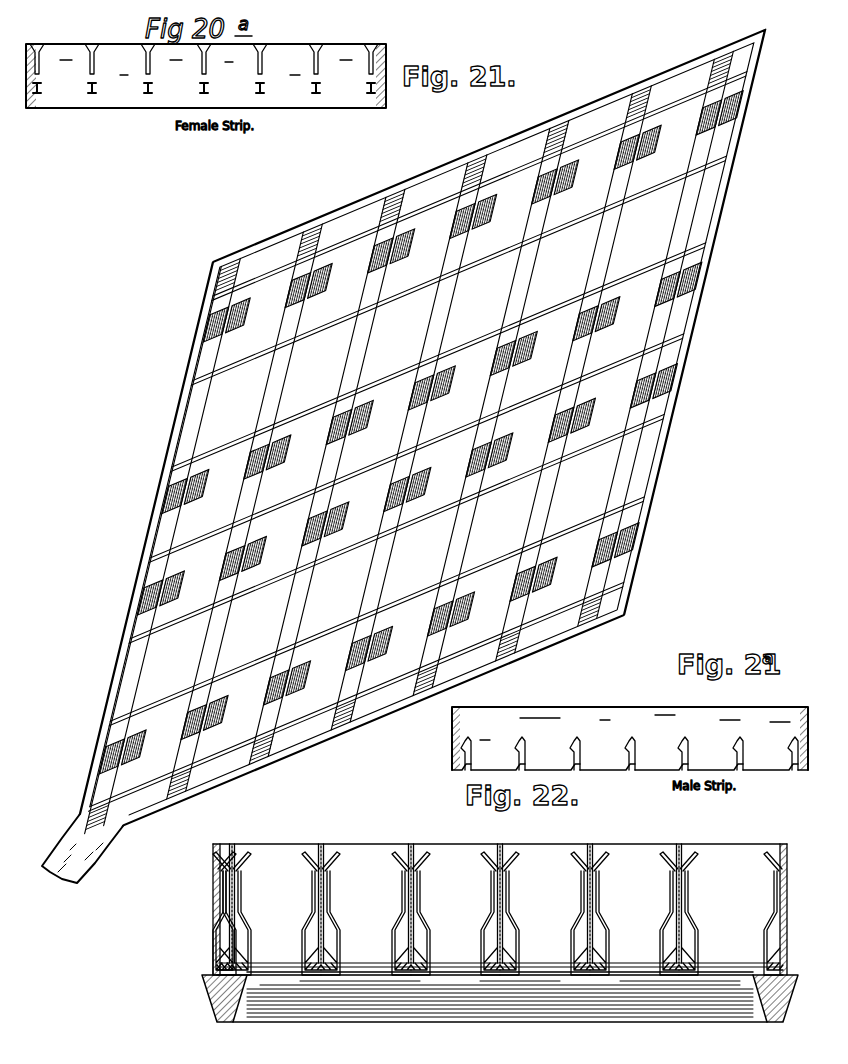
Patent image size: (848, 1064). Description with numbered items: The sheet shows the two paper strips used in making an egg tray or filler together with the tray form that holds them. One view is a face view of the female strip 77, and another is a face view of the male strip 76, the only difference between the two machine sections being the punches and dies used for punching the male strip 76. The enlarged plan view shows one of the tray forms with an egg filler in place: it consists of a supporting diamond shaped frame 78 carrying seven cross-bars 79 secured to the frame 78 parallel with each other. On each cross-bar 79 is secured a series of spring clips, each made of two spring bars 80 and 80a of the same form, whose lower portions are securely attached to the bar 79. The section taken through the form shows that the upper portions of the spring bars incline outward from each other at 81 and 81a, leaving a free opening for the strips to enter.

In FIG. 21A, the male strip 76 is at (529, 716).
In FIG. 20A, the female strip 77 is at (129, 98).
In FIG. 21, the diamond shaped frame 78 is at (292, 250).
In FIG. 22, the diamond shaped frame 78 is at (206, 992).
In FIG. 21, the cross-bar 79 is at (628, 255).
In FIG. 22, the cross-bar 79 is at (322, 975).
In FIG. 21, the spring bar 80 is at (578, 326).
In FIG. 22, the spring bar 80 is at (214, 866).
In FIG. 21, the spring bar 80a is at (612, 322).
In FIG. 22, the spring bar 80a is at (250, 862).
In FIG. 22, the outwardly inclined upper portion 81 is at (229, 880).
In FIG. 22, the outwardly inclined upper portion 81a is at (240, 880).